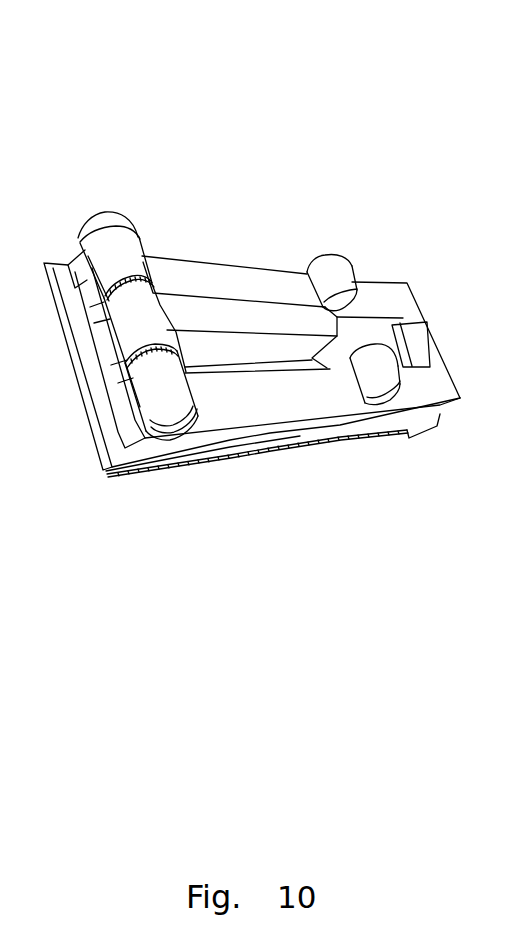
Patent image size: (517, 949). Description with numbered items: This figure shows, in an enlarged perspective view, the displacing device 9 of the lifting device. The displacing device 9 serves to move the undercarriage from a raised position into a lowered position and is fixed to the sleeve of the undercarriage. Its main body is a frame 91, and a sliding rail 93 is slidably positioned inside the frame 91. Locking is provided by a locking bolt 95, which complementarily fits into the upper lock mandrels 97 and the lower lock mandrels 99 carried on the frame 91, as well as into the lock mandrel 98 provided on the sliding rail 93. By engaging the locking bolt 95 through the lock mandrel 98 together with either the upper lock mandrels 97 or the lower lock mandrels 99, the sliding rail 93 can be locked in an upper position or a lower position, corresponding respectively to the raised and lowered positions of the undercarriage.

The displacing device 9 is at (207, 567).
The frame 91 is at (218, 262).
The sliding rail 93 is at (180, 297).
The locking bolt 95 is at (102, 211).
The upper lock mandrels 97 is at (109, 248).
The lock mandrel 98 is at (142, 318).
The lower lock mandrels 99 is at (325, 255).